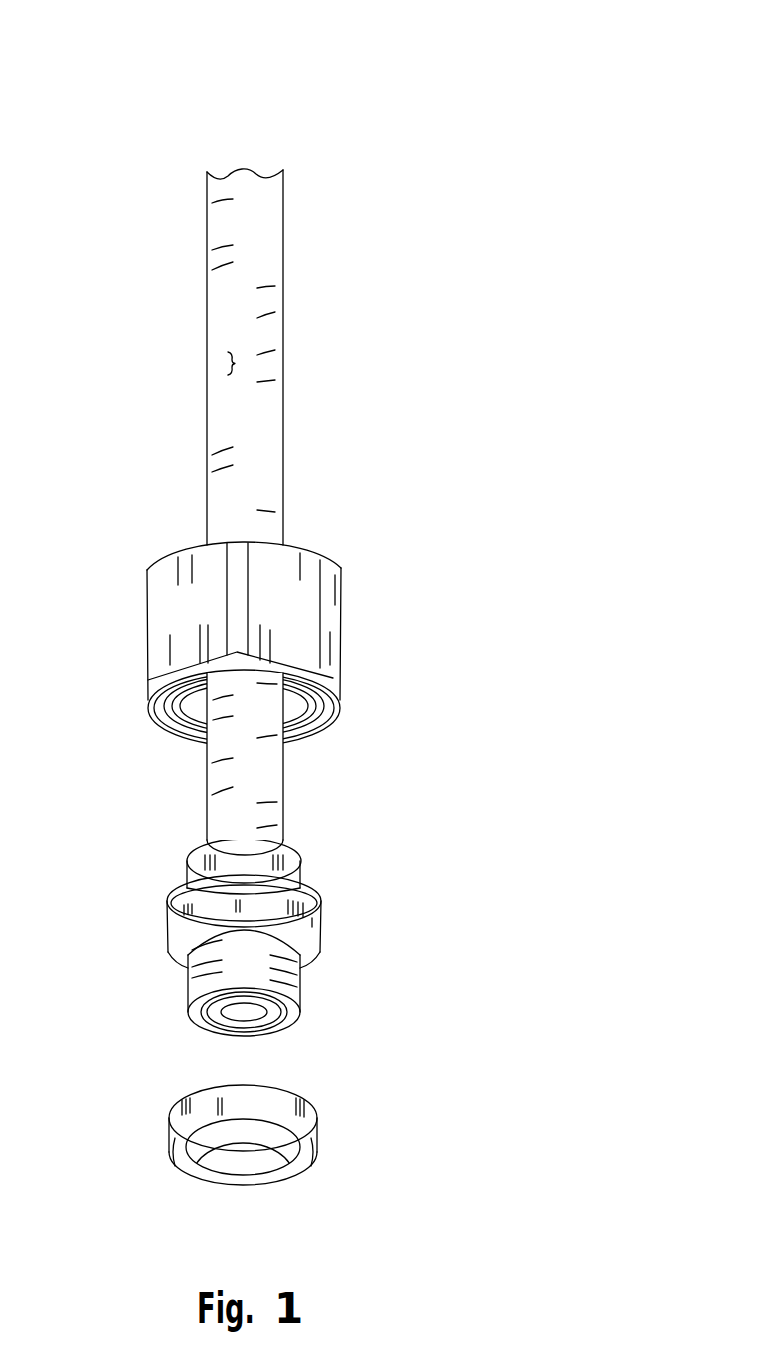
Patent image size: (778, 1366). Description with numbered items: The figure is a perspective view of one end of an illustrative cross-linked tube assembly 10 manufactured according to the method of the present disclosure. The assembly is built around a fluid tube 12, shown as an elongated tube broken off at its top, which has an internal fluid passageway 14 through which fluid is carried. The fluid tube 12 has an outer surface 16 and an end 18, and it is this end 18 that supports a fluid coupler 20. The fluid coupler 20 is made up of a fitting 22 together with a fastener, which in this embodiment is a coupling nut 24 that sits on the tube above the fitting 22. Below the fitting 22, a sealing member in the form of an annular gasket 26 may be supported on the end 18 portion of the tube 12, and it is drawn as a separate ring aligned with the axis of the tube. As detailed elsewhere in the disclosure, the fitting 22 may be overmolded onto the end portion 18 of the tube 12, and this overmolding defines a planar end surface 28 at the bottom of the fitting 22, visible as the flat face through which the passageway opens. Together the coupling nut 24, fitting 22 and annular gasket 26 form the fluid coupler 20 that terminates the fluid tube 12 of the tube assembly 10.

The tube assembly 10 is at (499, 109).
The fluid tube 12 is at (324, 374).
The fluid passageway 14 is at (263, 147).
The outer surface 16 is at (222, 360).
The end 18 is at (404, 611).
The fluid coupler 20 is at (428, 750).
The fitting 22 is at (175, 925).
The coupling nut 24 is at (173, 617).
The annular gasket 26 is at (310, 1127).
The planar end surface 28 is at (222, 1022).